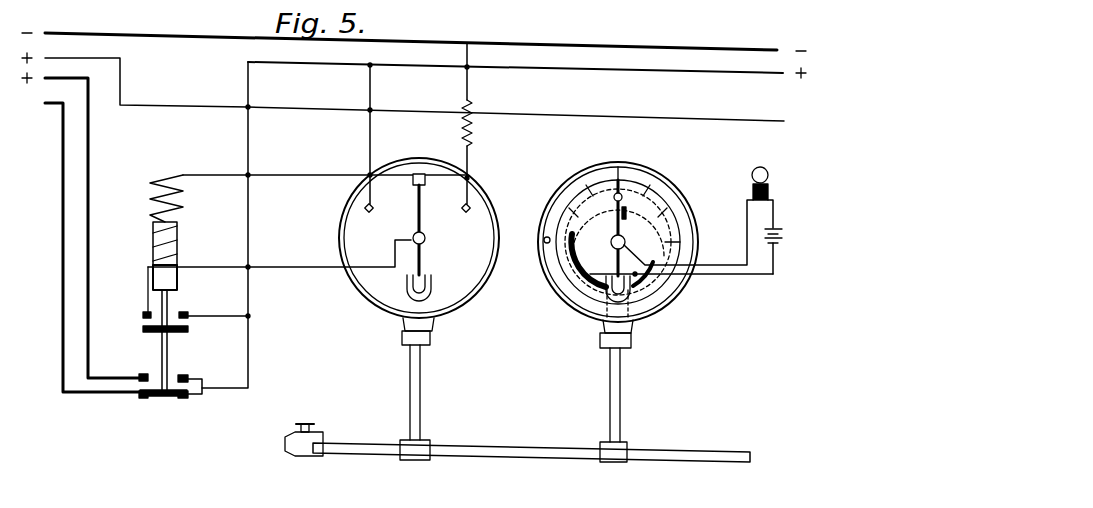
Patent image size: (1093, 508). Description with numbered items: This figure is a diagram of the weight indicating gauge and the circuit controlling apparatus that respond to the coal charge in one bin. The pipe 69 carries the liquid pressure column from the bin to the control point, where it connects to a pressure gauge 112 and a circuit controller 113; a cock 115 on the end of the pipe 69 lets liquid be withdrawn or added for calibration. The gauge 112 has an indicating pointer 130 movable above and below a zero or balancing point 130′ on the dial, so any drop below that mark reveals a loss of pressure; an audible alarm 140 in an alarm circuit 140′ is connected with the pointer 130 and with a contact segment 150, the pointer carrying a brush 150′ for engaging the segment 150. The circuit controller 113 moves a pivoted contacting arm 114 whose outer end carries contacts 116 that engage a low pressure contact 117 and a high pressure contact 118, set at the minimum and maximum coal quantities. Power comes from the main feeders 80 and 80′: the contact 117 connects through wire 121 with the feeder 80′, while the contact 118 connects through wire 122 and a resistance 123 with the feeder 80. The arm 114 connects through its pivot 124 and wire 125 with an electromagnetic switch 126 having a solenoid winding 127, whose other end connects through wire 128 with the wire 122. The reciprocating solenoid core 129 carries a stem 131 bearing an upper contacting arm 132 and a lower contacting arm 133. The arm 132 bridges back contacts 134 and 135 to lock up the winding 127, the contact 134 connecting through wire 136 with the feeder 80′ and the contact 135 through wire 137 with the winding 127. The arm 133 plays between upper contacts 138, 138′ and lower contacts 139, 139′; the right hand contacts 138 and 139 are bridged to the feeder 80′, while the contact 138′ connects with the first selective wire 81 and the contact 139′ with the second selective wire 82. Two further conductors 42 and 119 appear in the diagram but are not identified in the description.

The conductor 42 is at (72, 57).
The pipe 69 is at (701, 463).
The main feeder 80 is at (411, 50).
The main feeder 80' is at (515, 79).
The first selective wire 81 is at (64, 76).
The second selective wire 82 is at (61, 103).
The pressure gauge 112 is at (633, 331).
The circuit controller 113 is at (433, 328).
The contacting arm 114 is at (425, 259).
The cock 115 is at (303, 457).
The contacts 116 is at (421, 170).
The low pressure contact 117 is at (369, 215).
The high pressure contact 118 is at (466, 214).
The conductor 119 is at (249, 357).
The wire 121 is at (369, 134).
The wire 122 is at (470, 162).
The resistance 123 is at (474, 133).
The pivot 124 is at (433, 288).
The wire 125 is at (302, 268).
The electromagnetic contactor or switch 126 is at (148, 238).
The solenoid winding 127 is at (158, 206).
The wire 128 is at (289, 176).
The solenoid core 129 is at (172, 275).
The indicating pointer 130 is at (570, 298).
The zero or balancing point 130' is at (525, 260).
The stem 131 is at (168, 350).
The upper contacting arm 132 is at (188, 330).
The lower contacting arm 133 is at (165, 397).
The back contact 134 is at (190, 311).
The back contact 135 is at (143, 314).
The wire 136 is at (237, 317).
The wire 137 is at (148, 281).
The upper right hand contact 138 is at (199, 376).
The upper left hand contact 138' is at (130, 364).
The lower right hand contact 139 is at (196, 408).
The lower left hand contact 139' is at (124, 406).
The audible alarm 140 is at (703, 220).
The alarm circuit 140' is at (755, 294).
The contact segment 150 is at (639, 273).
The brush 150' is at (679, 219).